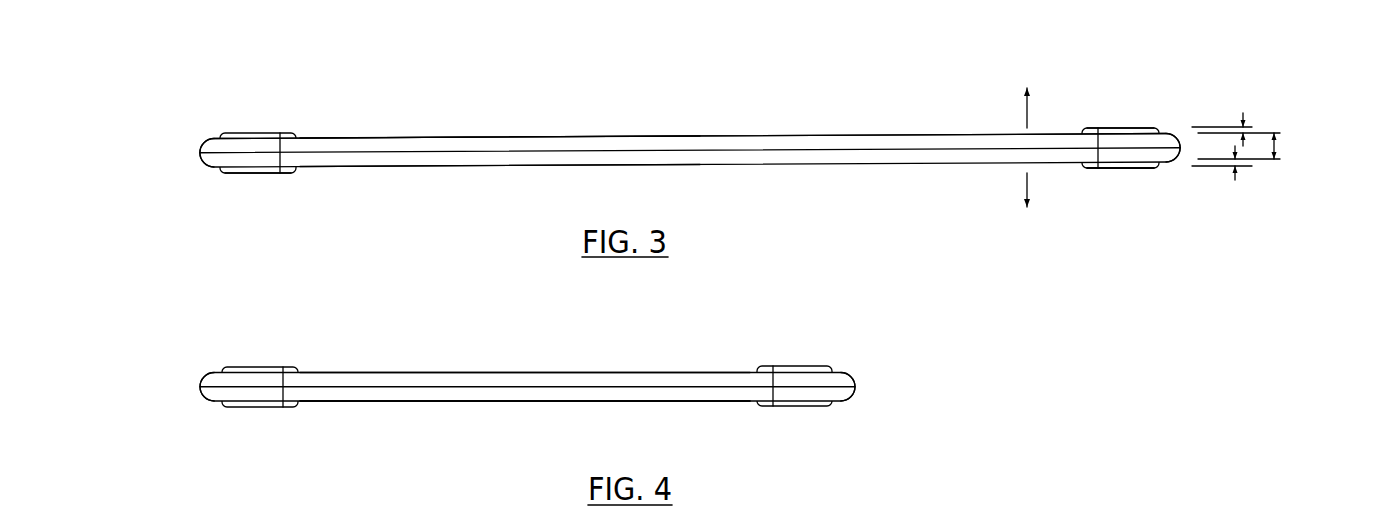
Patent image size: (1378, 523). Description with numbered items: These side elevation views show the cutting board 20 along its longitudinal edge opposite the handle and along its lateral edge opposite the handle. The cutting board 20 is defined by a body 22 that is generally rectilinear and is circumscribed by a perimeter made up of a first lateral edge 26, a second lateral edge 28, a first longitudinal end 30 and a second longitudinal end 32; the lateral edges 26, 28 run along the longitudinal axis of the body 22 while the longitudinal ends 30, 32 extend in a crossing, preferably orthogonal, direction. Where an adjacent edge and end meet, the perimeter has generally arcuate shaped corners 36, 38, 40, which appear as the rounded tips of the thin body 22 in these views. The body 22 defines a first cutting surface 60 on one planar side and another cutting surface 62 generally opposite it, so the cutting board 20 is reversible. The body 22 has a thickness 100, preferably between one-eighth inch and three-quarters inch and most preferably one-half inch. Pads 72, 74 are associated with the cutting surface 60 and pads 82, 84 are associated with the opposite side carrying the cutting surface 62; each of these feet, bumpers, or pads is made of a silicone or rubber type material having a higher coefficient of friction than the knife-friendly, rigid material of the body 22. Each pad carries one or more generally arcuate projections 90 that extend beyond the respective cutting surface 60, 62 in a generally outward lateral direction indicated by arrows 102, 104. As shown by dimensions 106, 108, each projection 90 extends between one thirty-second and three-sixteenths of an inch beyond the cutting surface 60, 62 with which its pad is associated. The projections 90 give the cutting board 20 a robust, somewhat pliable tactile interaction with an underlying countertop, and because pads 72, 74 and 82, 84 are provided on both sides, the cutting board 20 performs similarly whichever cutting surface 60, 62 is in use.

In FIG. 3, the cutting board 20 is at (1228, 78).
In FIG. 4, the cutting board 20 is at (955, 363).
In FIG. 3, the body 22 is at (851, 143).
In FIG. 4, the body 22 is at (618, 382).
In FIG. 4, the first lateral edge 26 is at (852, 375).
In FIG. 3, the second lateral edge 28 is at (658, 143).
In FIG. 4, the second lateral edge 28 is at (203, 382).
In FIG. 3, the first longitudinal end 30 is at (1180, 137).
In FIG. 3, the second longitudinal end 32 is at (198, 155).
In FIG. 4, the second longitudinal end 32 is at (368, 393).
In FIG. 3, the arcuate shaped corner 36 is at (1168, 155).
In FIG. 3, the arcuate shaped corner 38 is at (208, 160).
In FIG. 4, the arcuate shaped corner 38 is at (215, 390).
In FIG. 4, the arcuate shaped corner 40 is at (840, 393).
In FIG. 3, the first cutting surface 60 is at (527, 120).
In FIG. 4, the first cutting surface 60 is at (440, 373).
In FIG. 3, the cutting surface 62 is at (515, 180).
In FIG. 4, the cutting surface 62 is at (442, 404).
In FIG. 3, the pad 72 is at (1107, 130).
In FIG. 3, the pad 74 is at (268, 135).
In FIG. 3, the pad 82 is at (1117, 172).
In FIG. 3, the pad 84 is at (268, 172).
In FIG. 3, the projection 90 is at (1135, 128).
In FIG. 3, the thickness 100 is at (1277, 146).
In FIG. 3, the arrow 102 is at (1025, 118).
In FIG. 3, the arrow 104 is at (1030, 180).
In FIG. 3, the dimension 106 is at (1243, 113).
In FIG. 3, the dimension 108 is at (1235, 180).